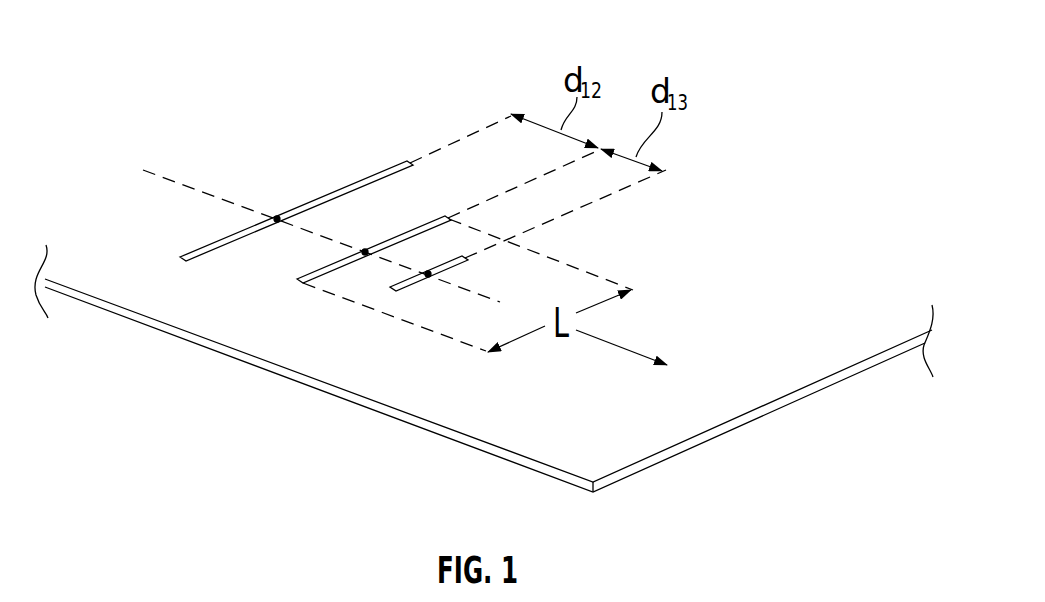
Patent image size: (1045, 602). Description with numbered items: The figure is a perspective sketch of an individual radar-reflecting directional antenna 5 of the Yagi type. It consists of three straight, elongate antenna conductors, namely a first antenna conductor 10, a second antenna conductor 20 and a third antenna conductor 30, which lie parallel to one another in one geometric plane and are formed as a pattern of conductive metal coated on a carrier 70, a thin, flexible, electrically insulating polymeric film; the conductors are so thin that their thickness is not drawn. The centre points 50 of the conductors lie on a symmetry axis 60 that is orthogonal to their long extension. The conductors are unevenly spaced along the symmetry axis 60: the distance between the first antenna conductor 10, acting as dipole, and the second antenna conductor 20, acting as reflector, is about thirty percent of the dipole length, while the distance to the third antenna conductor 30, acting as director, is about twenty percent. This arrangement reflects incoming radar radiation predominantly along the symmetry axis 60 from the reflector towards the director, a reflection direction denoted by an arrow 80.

The radar-reflecting directional antenna 5 is at (318, 108).
The first antenna conductor 10 is at (298, 281).
The second antenna conductor 20 is at (190, 253).
The third antenna conductor 30 is at (390, 290).
The centre points 50 is at (278, 217).
The symmetry axis 60 is at (143, 170).
The carrier 70 is at (513, 441).
The arrow 80 is at (632, 350).